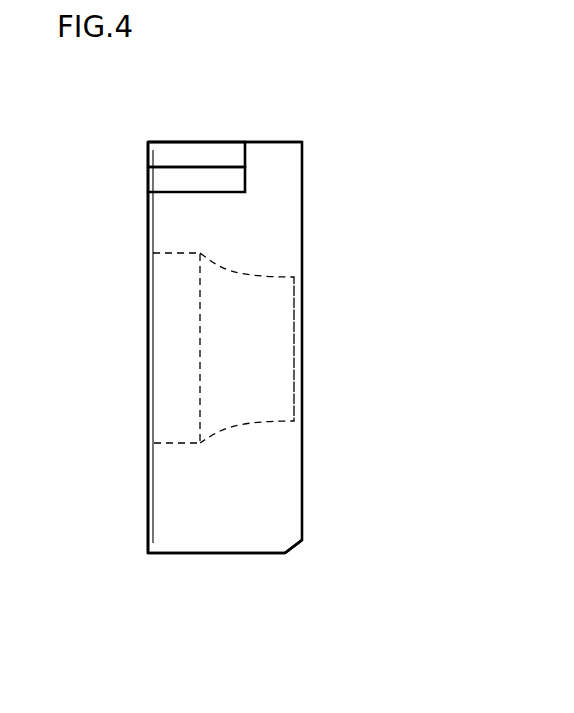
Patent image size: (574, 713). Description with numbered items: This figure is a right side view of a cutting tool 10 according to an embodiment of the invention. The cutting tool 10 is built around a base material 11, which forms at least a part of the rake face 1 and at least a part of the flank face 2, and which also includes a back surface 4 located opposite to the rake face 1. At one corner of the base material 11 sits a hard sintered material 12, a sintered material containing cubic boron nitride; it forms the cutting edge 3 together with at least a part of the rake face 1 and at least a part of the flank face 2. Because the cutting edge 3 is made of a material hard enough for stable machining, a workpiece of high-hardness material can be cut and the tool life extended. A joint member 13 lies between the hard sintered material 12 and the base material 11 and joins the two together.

The cutting tool 10 is at (329, 96).
The rake face 1 is at (146, 518).
The flank face 2 is at (197, 142).
The cutting edge 3 is at (149, 141).
The back surface 4 is at (303, 518).
The base material 11 is at (226, 540).
The hard sintered material 12 is at (163, 151).
The joint member 13 is at (164, 177).